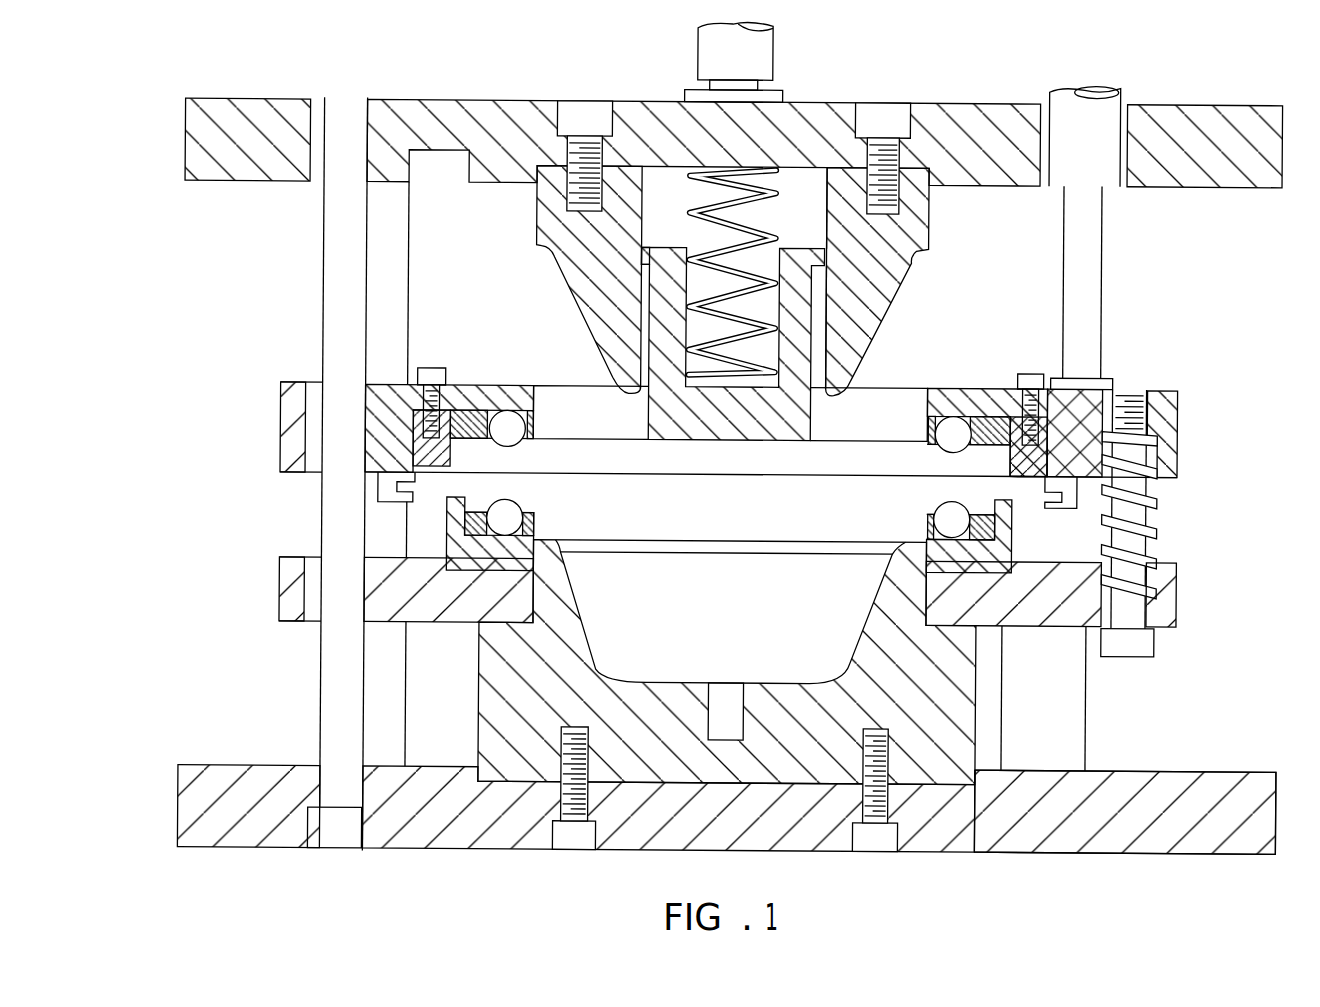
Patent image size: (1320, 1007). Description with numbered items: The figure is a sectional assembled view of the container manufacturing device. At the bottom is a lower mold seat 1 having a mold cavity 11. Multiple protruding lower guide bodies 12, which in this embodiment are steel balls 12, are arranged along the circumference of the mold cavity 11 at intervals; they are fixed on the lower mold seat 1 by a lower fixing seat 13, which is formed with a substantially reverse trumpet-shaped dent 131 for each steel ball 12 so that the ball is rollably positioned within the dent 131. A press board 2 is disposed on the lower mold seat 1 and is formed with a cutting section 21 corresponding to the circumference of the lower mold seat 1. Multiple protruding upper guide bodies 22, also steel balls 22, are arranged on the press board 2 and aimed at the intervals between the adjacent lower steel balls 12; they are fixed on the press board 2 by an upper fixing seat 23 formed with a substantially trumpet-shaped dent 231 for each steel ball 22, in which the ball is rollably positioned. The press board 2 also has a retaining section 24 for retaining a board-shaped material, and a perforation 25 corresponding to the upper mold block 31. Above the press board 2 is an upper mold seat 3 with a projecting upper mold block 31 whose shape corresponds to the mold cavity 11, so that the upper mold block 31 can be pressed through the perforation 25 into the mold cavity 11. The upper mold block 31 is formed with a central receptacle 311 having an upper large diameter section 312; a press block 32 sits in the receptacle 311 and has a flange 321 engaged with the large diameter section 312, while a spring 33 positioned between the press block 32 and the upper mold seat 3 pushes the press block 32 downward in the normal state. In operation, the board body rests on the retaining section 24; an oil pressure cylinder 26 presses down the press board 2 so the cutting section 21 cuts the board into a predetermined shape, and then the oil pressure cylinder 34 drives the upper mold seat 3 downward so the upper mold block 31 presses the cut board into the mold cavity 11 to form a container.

The lower mold seat 1 is at (985, 660).
The press board 2 is at (392, 407).
The upper mold seat 3 is at (950, 137).
The mold cavity 11 is at (870, 618).
The lower guide body 12 is at (516, 513).
The lower fixing seat 13 is at (1010, 504).
The cutting section 21 is at (1100, 412).
The upper guide body 22 is at (516, 431).
The upper fixing seat 23 is at (481, 430).
The retaining section 24 is at (387, 490).
The perforation 25 is at (542, 388).
The oil pressure cylinder 26 is at (1107, 115).
The upper mold block 31 is at (873, 278).
The press block 32 is at (785, 421).
The spring 33 is at (687, 162).
The oil pressure cylinder 34 is at (748, 55).
The reverse trumpet-shaped dent 131 is at (895, 556).
The trumpet-shaped dent 231 is at (937, 416).
The central receptacle 311 is at (805, 321).
The upper large diameter section 312 is at (815, 212).
The flange 321 is at (652, 250).